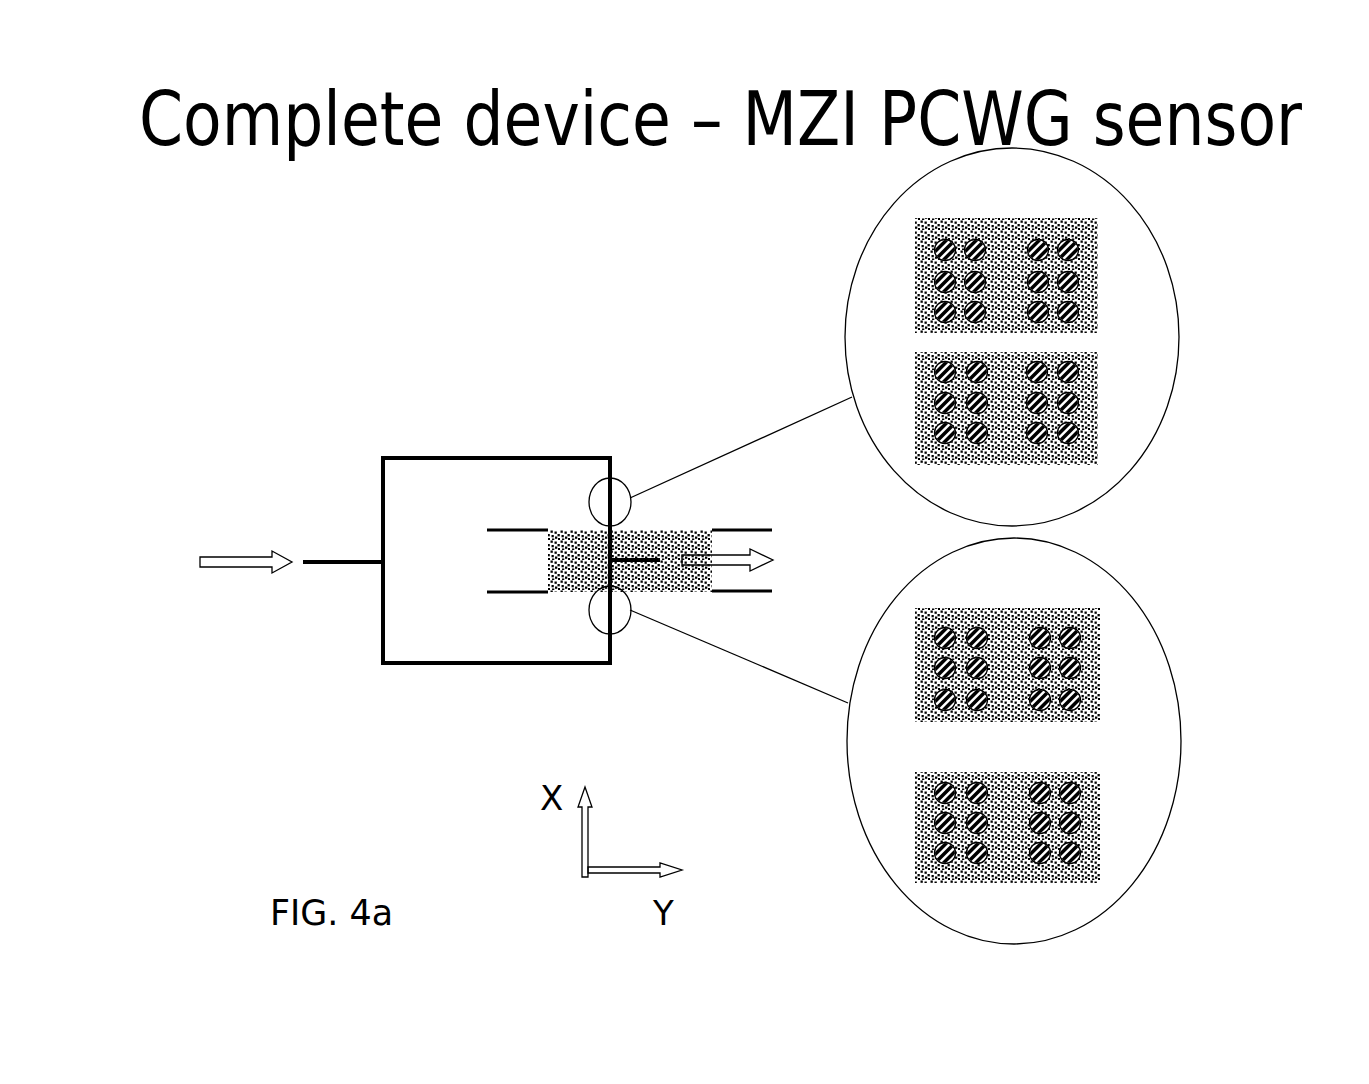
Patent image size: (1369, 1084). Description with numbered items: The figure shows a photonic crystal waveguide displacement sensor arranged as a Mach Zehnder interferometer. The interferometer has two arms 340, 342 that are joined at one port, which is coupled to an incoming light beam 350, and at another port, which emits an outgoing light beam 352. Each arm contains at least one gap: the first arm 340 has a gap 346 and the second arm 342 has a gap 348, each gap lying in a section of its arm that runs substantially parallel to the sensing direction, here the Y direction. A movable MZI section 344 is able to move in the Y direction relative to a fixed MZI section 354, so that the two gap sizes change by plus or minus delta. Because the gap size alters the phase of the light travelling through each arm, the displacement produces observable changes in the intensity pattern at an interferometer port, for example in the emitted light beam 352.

The first arm 340 is at (483, 448).
The second arm 342 is at (463, 672).
The movable MZI section 344 is at (640, 587).
The gap 346 is at (1047, 337).
The gap 348 is at (1053, 741).
The light beam 350 is at (235, 542).
The light beam 352 is at (725, 542).
The fixed MZI section 354 is at (500, 600).